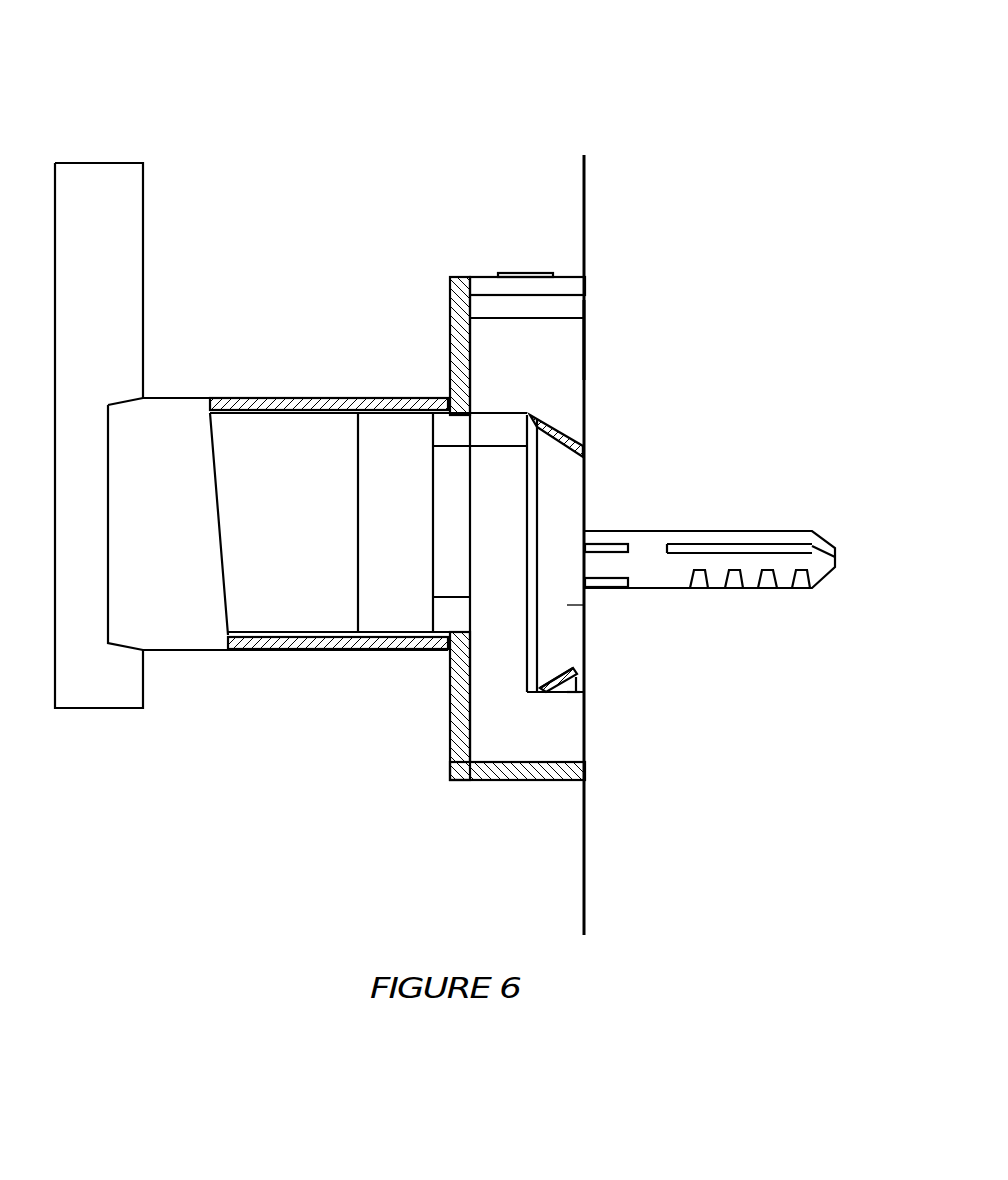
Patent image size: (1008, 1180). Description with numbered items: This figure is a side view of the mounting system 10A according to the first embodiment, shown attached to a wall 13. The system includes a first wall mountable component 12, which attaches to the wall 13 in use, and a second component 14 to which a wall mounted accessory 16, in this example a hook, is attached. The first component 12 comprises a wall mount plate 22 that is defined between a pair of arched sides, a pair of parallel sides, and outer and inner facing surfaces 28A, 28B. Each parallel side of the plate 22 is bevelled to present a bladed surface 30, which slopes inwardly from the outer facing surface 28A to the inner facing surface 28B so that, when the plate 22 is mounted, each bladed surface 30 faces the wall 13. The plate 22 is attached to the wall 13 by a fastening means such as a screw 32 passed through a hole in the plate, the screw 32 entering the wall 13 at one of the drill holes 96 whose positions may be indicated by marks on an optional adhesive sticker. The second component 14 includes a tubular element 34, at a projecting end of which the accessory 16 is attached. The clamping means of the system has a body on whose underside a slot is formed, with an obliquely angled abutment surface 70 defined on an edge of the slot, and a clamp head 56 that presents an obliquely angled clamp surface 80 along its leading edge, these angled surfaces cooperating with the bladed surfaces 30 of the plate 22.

The mounting system 10A is at (499, 150).
The first wall mountable component 12 is at (562, 481).
The wall 13 is at (590, 342).
The second component 14 is at (272, 683).
The wall mounted accessory 16 is at (118, 275).
The wall mount plate 22 is at (567, 605).
The outer facing surface 28A is at (587, 497).
The inner facing surface 28B is at (533, 658).
The bladed surface 30 is at (540, 486).
The screw 32 is at (787, 575).
The tubular element 34 is at (360, 397).
The clamp head 56 is at (567, 692).
The obliquely angled abutment surface 70 is at (546, 488).
The obliquely angled clamp surface 80 is at (568, 676).
The drill holes 96 is at (785, 527).